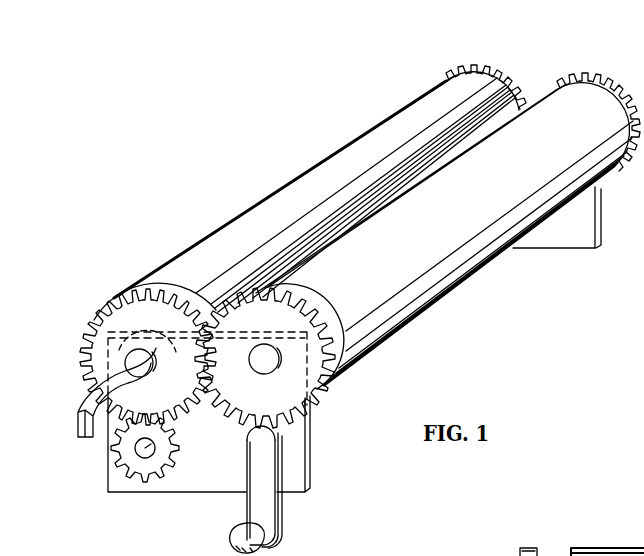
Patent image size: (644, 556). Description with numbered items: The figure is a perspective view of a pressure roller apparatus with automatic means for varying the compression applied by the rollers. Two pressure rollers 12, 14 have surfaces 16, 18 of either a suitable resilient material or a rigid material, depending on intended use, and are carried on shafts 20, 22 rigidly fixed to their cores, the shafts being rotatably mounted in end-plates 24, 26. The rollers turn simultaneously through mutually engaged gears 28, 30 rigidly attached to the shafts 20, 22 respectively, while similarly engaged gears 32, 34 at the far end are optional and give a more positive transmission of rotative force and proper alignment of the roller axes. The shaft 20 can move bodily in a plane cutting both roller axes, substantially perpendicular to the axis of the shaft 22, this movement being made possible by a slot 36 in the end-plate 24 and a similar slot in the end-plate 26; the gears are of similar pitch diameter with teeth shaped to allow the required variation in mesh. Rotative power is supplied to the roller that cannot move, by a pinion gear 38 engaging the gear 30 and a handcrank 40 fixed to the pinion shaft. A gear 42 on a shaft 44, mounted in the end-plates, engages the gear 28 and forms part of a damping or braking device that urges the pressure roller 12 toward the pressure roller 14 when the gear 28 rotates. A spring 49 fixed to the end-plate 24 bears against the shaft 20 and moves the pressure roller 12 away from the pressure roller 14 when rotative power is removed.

In FIG. 1, the pressure roller 12 is at (263, 199).
In FIG. 2, the pressure roller 12 is at (612, 546).
In FIG. 1, the pressure roller 14 is at (507, 261).
In FIG. 1, the surface 16 is at (211, 256).
In FIG. 1, the surface 18 is at (448, 284).
In FIG. 1, the shaft 20 is at (140, 363).
In FIG. 1, the shaft 22 is at (274, 366).
In FIG. 1, the end-plate 24 is at (172, 483).
In FIG. 2, the end-plate 24 is at (546, 553).
In FIG. 1, the end-plate 26 is at (589, 224).
In FIG. 1, the gear 28 is at (88, 348).
In FIG. 1, the gear 30 is at (312, 404).
In FIG. 1, the gear 32 is at (466, 70).
In FIG. 1, the gear 34 is at (580, 70).
In FIG. 1, the slot 36 is at (115, 328).
In FIG. 1, the pinion gear 38 is at (290, 432).
In FIG. 1, the handcrank 40 is at (268, 508).
In FIG. 1, the gear 42 is at (114, 442).
In FIG. 1, the shaft 44 is at (139, 453).
In FIG. 1, the spring 49 is at (100, 396).